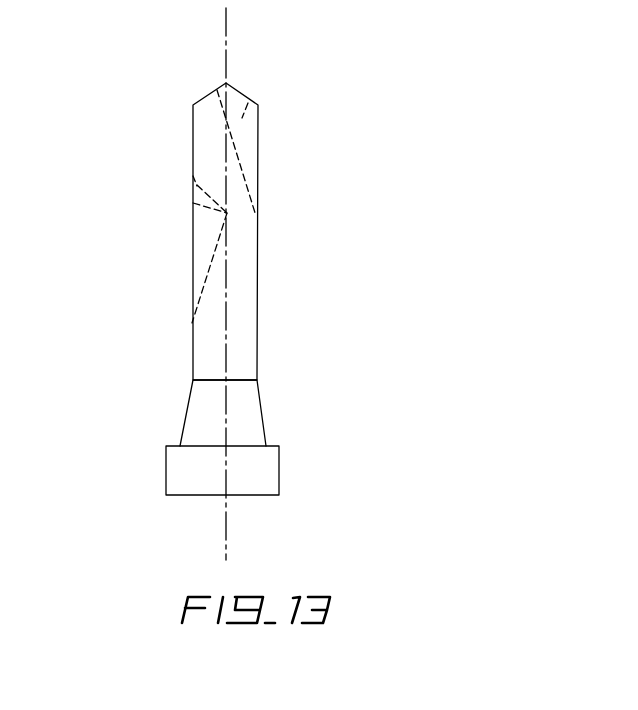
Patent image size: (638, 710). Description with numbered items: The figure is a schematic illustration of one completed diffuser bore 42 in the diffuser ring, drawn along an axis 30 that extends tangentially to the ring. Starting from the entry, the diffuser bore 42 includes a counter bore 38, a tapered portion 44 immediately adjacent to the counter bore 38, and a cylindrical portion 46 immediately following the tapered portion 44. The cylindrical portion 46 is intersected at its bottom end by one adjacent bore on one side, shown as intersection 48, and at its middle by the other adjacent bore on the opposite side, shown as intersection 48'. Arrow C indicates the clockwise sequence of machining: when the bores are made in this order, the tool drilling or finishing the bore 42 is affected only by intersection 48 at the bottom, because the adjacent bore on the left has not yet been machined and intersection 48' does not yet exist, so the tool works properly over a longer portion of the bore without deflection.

The axis 30 is at (228, 33).
The cylindrical portion 46 is at (193, 127).
The intersection 48 is at (288, 137).
The intersection 48' is at (149, 233).
The tapered portion 44 is at (187, 395).
The counter bore 38 is at (279, 463).
The diffuser bore 42 is at (280, 378).
The arrow C is at (417, 422).